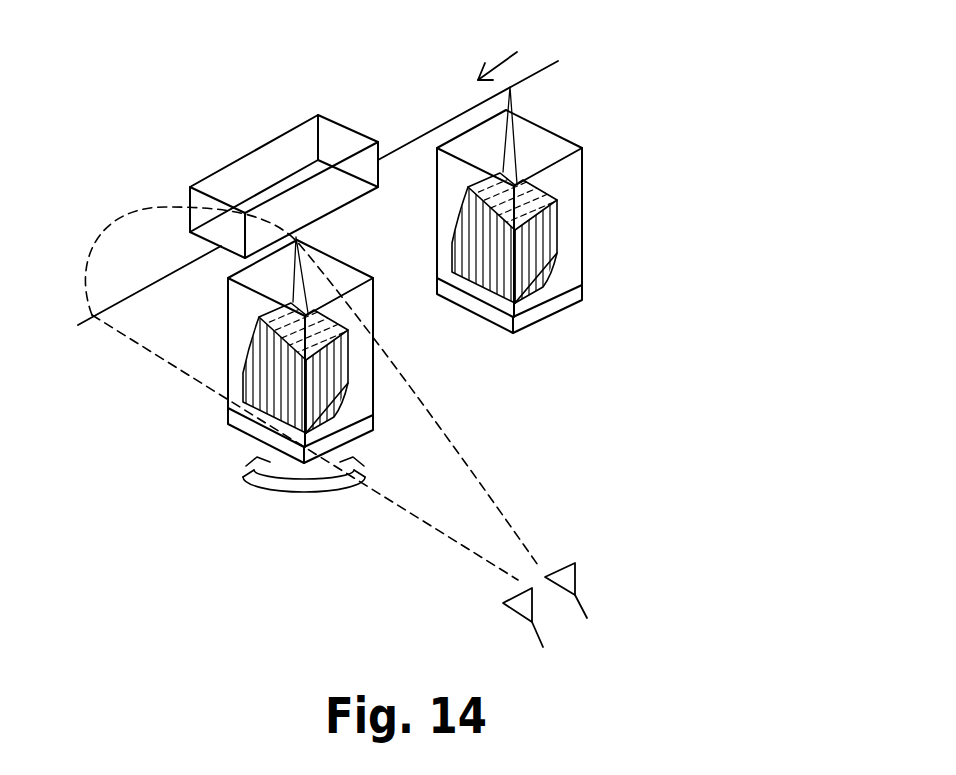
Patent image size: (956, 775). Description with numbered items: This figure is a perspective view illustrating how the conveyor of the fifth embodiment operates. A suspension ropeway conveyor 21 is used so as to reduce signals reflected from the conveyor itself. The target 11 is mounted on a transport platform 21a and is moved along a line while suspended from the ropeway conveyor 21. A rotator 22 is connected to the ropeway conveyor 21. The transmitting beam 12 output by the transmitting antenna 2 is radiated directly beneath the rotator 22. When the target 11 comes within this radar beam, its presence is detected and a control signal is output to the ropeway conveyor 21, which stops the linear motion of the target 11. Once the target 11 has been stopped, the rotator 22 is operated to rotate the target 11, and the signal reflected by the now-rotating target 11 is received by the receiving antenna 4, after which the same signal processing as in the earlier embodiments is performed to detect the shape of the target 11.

The transmitting antenna 2 is at (577, 575).
The receiving antenna 4 is at (505, 598).
The target 11 is at (548, 282).
The transmitting beam 12 is at (473, 480).
The suspension ropeway conveyor 21 is at (92, 318).
The transport platform 21a is at (575, 292).
The rotator 22 is at (223, 167).